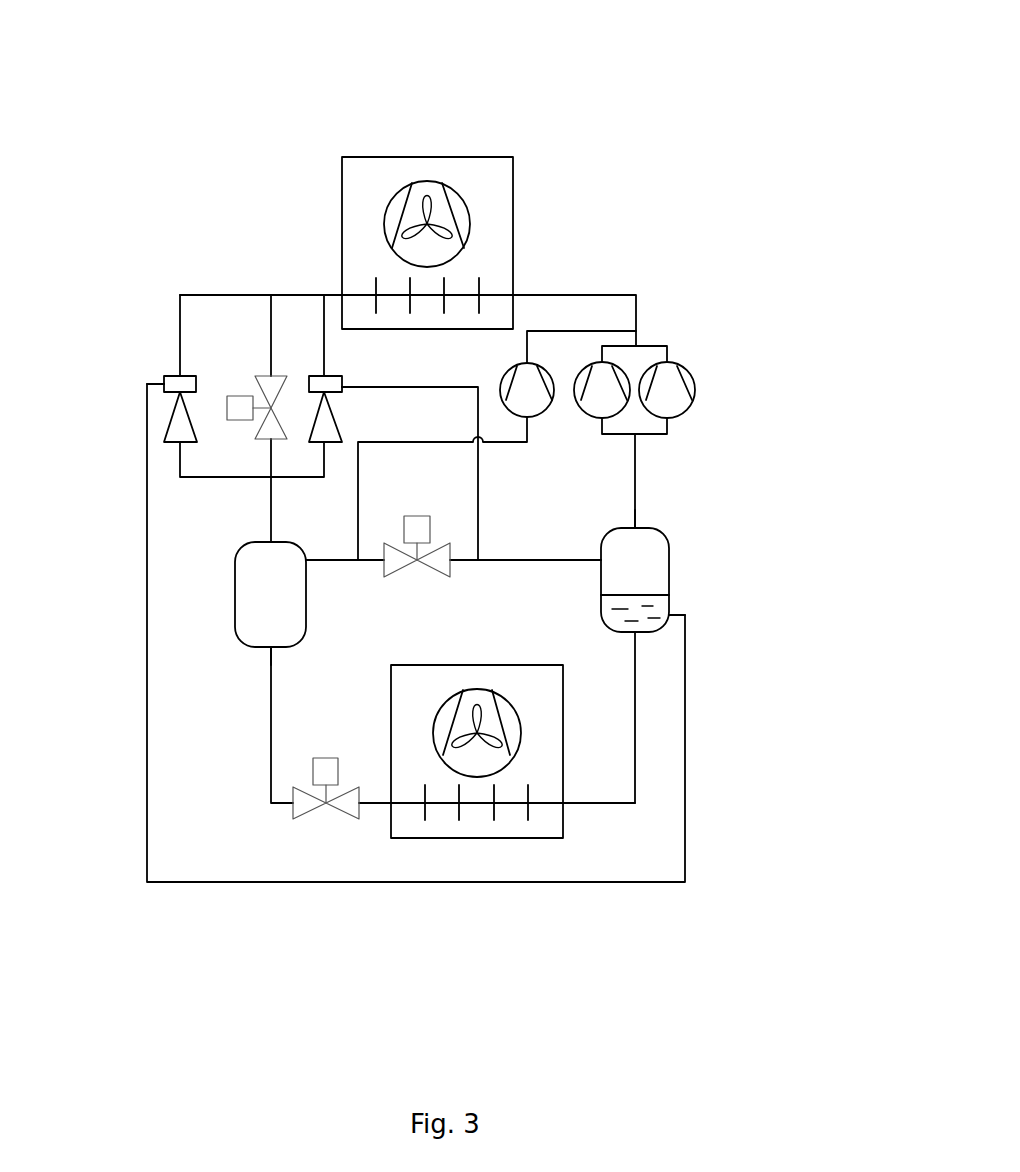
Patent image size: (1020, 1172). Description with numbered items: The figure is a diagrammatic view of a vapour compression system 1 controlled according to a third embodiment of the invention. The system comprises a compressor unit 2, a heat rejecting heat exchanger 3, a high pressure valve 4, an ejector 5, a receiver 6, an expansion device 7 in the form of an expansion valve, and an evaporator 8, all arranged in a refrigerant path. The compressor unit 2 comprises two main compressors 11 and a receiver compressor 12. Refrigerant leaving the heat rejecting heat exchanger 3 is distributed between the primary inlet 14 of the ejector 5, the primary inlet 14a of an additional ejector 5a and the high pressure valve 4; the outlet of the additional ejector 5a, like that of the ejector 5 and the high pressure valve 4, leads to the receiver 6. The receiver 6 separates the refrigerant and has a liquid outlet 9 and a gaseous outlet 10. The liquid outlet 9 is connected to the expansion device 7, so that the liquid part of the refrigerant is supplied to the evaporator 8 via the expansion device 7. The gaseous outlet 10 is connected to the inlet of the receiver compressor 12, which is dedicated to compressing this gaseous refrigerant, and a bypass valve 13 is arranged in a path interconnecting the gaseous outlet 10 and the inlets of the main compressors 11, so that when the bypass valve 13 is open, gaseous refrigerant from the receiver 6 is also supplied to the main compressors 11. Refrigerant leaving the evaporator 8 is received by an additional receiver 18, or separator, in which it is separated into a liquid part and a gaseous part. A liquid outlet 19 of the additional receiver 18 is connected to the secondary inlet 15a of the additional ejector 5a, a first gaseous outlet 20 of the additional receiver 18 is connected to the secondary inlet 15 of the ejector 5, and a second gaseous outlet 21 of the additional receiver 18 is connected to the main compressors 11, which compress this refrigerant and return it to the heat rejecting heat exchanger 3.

The vapour compression system 1 is at (735, 88).
The compressor unit 2 is at (663, 338).
The heat rejecting heat exchanger 3 is at (456, 166).
The high pressure valve 4 is at (268, 386).
The ejector 5 is at (325, 430).
The additional ejector 5a is at (178, 424).
The receiver 6 is at (263, 590).
The expansion device 7 is at (298, 810).
The evaporator 8 is at (533, 823).
The liquid outlet 9 is at (270, 647).
The gaseous outlet 10 is at (303, 560).
The main compressors 11 is at (665, 383).
The receiver compressor 12 is at (530, 372).
The bypass valve 13 is at (436, 567).
The primary inlet 14 is at (327, 378).
The primary inlet of additional ejector 14a is at (180, 376).
The secondary inlet 15 is at (342, 388).
The secondary inlet of additional ejector 15a is at (162, 382).
The additional receiver 18 is at (645, 558).
The liquid outlet of additional receiver 19 is at (670, 615).
The first gaseous outlet 20 is at (598, 560).
The second gaseous outlet 21 is at (632, 529).